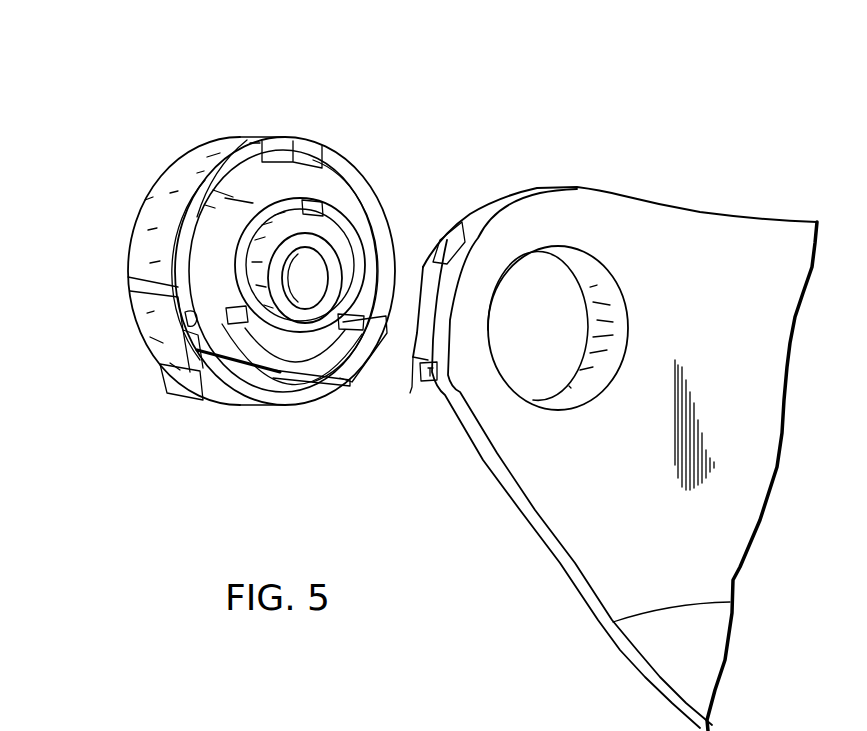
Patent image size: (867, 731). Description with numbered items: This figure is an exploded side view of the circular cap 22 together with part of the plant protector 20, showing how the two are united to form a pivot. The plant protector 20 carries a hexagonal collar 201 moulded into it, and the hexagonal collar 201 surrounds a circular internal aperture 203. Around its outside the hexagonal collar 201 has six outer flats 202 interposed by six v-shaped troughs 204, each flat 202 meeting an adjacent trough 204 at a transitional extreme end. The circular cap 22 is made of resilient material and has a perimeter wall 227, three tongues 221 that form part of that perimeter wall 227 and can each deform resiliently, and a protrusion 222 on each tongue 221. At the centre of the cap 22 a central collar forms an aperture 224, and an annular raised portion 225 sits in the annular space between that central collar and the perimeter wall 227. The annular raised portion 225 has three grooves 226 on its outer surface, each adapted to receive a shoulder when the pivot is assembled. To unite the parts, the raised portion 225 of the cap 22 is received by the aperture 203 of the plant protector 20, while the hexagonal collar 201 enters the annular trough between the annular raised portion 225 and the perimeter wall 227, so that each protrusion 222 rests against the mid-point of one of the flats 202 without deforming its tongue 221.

The plant protector 20 is at (728, 253).
The circular cap 22 is at (412, 152).
The hexagonal collar 201 is at (530, 188).
The outer flat 202 is at (428, 305).
The circular internal aperture 203 is at (614, 290).
The v-shaped trough 204 is at (412, 392).
The tongue 221 is at (313, 147).
The protrusion 222 is at (296, 160).
The aperture 224 is at (310, 293).
The annular raised portion 225 is at (362, 230).
The groove 226 is at (265, 224).
The perimeter wall 227 is at (190, 185).